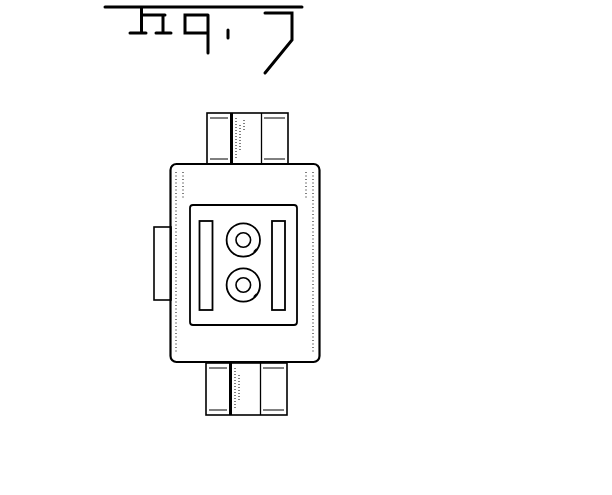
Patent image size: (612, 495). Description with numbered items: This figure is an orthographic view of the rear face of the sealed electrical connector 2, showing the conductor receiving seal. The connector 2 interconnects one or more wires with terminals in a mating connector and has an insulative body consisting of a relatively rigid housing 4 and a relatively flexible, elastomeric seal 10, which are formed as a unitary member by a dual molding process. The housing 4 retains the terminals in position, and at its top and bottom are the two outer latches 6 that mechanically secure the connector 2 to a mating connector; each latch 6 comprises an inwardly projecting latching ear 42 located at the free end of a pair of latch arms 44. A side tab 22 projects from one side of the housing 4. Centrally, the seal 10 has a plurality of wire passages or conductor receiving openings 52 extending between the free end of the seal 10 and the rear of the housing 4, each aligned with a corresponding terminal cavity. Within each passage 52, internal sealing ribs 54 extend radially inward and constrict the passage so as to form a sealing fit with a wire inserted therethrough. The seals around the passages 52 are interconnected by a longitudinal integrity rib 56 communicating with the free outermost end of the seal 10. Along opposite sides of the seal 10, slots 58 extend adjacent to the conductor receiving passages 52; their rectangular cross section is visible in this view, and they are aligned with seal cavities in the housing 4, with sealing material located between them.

The sealed electrical connector 2 is at (358, 132).
The housing 4 is at (168, 203).
The latches 6 is at (206, 132).
The seal 10 is at (292, 222).
The side mounting tab 22 is at (178, 338).
The latching ear 42 is at (250, 152).
The latch arms 44 is at (268, 113).
The conductor receiving openings 52 is at (248, 224).
The sealing ribs 54 is at (232, 224).
The longitudinal integrity rib 56 is at (258, 288).
The slots 58 is at (206, 263).